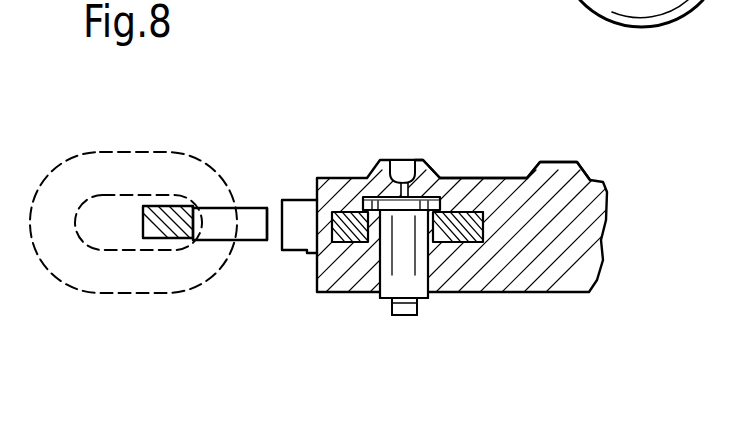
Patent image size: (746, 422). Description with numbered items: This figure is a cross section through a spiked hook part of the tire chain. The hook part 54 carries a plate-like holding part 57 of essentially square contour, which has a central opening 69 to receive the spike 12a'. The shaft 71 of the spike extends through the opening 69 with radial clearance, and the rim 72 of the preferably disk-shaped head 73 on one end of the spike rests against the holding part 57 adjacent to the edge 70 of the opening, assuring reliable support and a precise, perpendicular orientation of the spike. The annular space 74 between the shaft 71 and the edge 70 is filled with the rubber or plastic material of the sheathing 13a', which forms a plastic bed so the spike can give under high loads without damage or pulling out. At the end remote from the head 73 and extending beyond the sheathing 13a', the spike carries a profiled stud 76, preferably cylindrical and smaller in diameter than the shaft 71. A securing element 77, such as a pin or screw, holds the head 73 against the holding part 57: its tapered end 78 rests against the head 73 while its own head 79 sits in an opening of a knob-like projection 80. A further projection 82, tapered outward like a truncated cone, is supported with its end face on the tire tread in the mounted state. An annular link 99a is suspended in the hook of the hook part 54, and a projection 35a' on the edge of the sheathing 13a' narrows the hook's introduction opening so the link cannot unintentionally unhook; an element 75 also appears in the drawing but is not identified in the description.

The spike 12a' is at (370, 334).
The sheathing 13a' is at (268, 269).
The projection 35a' is at (222, 273).
The hook part 54 is at (251, 206).
The holding part 57 is at (518, 205).
The central opening 69 is at (456, 212).
The edge of the opening 70 is at (326, 288).
The shaft 71 is at (457, 342).
The rim 72 is at (362, 208).
The head 73 is at (388, 205).
The annular space 74 is at (379, 252).
The right bearing bush 75 is at (435, 244).
The profiled stud 76 is at (422, 351).
The securing element 77 is at (415, 159).
The tapered end 78 is at (408, 352).
The head of the securing element 79 is at (403, 166).
The knob-like projection 80 is at (373, 203).
The projection 82 is at (563, 177).
The annular link 99a is at (173, 206).